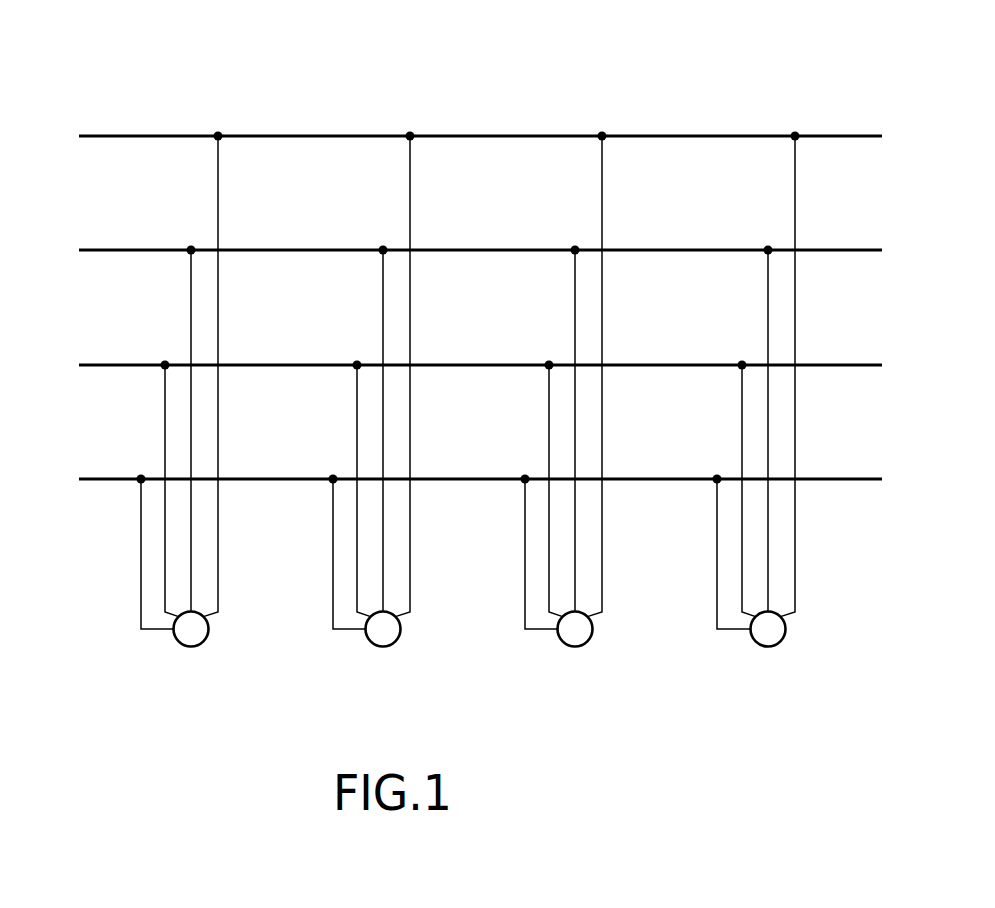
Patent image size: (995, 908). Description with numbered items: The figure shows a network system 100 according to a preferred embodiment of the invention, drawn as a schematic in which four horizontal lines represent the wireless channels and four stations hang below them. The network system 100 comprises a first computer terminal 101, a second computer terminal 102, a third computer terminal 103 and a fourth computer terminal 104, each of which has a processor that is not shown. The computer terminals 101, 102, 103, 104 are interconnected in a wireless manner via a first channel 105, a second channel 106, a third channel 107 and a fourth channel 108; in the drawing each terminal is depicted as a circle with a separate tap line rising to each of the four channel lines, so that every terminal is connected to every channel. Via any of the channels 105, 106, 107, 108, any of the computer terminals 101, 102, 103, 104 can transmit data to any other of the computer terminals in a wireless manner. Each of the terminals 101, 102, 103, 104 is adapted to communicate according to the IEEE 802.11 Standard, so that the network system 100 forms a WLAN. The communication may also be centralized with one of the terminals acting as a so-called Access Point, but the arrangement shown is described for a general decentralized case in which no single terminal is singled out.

The network system 100 is at (776, 102).
The first computer terminal 101 is at (209, 630).
The second computer terminal 102 is at (401, 630).
The third computer terminal 103 is at (593, 630).
The fourth computer terminal 104 is at (786, 630).
The first channel 105 is at (102, 135).
The second channel 106 is at (102, 249).
The third channel 107 is at (102, 364).
The fourth channel 108 is at (102, 478).